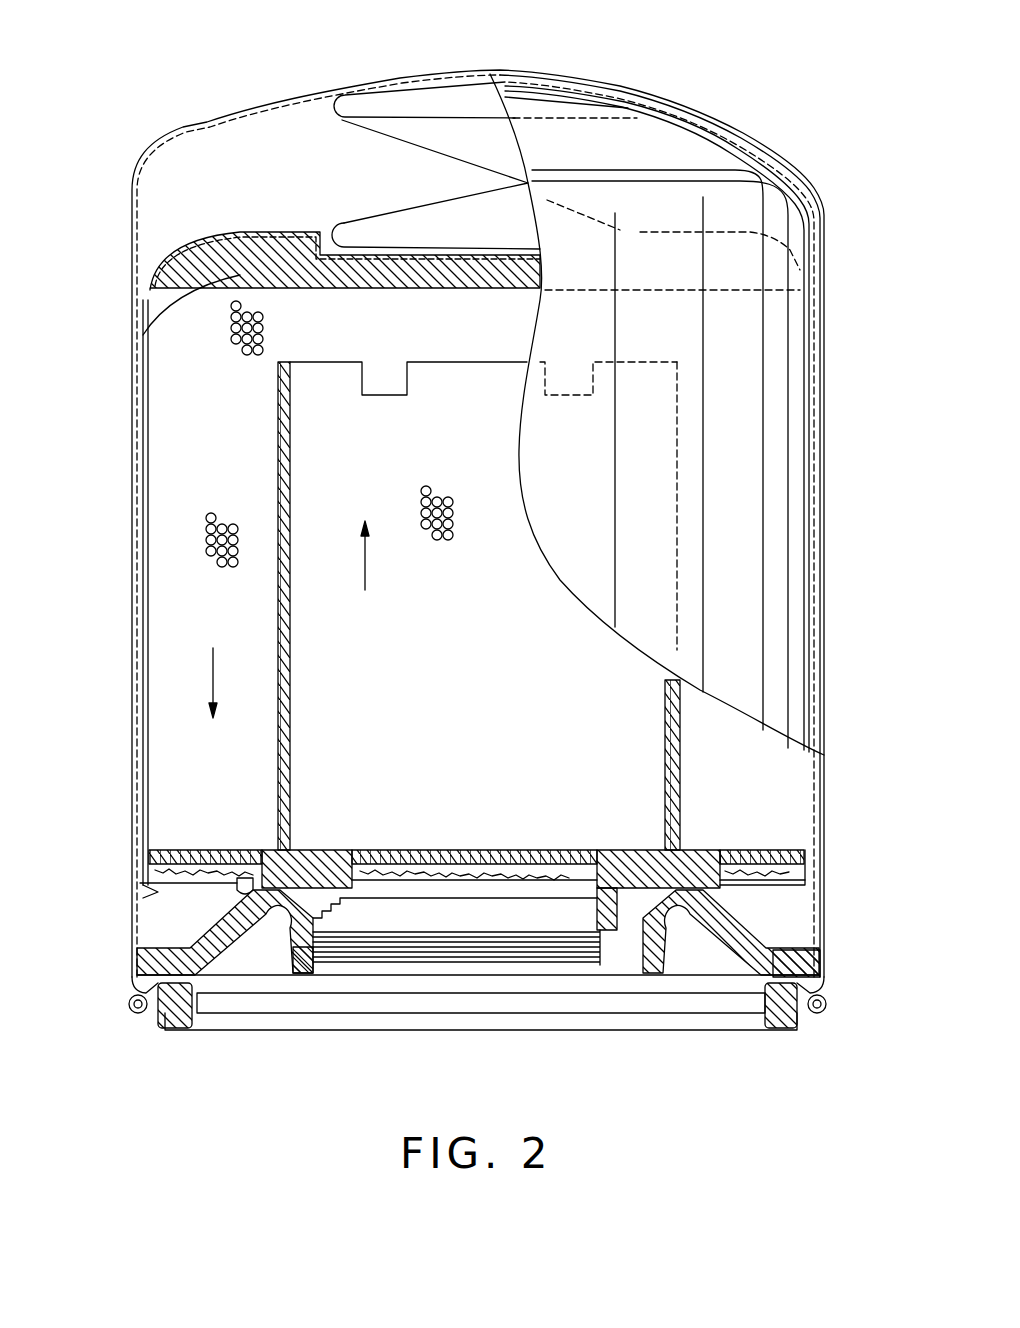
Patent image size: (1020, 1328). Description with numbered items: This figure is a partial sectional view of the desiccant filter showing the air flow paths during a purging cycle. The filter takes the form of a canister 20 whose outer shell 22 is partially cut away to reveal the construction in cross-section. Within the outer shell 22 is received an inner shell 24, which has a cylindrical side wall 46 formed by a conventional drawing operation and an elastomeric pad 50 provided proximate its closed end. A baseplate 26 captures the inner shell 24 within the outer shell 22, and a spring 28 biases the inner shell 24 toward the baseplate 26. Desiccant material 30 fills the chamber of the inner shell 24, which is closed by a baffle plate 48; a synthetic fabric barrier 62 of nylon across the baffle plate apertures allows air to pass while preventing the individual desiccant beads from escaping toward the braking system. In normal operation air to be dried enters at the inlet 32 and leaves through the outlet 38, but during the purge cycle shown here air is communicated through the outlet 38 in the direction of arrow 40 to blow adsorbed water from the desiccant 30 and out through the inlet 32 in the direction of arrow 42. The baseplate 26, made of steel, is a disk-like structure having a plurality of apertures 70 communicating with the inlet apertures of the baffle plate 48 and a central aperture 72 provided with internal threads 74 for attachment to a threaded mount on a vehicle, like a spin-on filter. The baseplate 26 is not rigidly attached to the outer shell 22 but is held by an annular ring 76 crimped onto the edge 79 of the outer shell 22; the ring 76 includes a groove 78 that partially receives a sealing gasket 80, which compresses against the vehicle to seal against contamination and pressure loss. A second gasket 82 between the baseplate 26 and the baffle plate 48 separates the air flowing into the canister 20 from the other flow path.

The canister 20 is at (745, 50).
The outer shell 22 is at (207, 122).
The inner shell 24 is at (172, 265).
The baseplate 26 is at (818, 960).
The spring 28 is at (366, 104).
The desiccant material 30 is at (213, 542).
The inlet 32 is at (172, 850).
The outlet 38 is at (386, 850).
The arrow 40 is at (372, 538).
The arrow 42 is at (202, 690).
The cylindrical side wall 46 is at (149, 446).
The baffle plate 48 is at (737, 848).
The elastomeric pad 50 is at (146, 336).
The synthetic fabric barrier 62 is at (158, 896).
The apertures 70 is at (255, 945).
The central aperture 72 is at (555, 920).
The internal threads 74 is at (307, 955).
The annular ring 76 is at (136, 996).
The groove 78 is at (150, 1030).
The edge 79 is at (820, 983).
The sealing gasket 80 is at (195, 1022).
The second gasket 82 is at (400, 922).